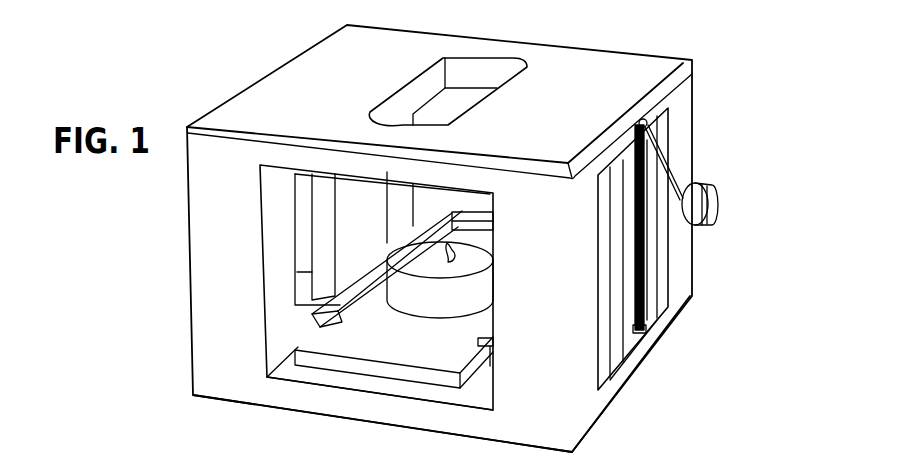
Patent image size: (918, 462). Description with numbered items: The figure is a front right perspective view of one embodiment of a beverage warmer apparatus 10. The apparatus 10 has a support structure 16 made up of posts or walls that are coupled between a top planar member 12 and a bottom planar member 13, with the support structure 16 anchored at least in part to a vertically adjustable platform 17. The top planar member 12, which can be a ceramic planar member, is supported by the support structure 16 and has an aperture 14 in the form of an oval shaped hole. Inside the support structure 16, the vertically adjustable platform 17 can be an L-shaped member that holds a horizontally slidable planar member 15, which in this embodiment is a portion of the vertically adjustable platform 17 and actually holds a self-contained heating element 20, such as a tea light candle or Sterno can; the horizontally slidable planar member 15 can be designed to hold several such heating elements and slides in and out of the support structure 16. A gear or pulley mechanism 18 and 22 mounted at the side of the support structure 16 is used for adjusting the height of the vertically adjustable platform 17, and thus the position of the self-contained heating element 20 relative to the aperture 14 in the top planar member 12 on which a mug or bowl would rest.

The beverage warmer apparatus 10 is at (118, 221).
The top planar member 12 is at (358, 84).
The bottom planar member 13 is at (392, 421).
The aperture 14 is at (456, 98).
The horizontally slidable planar member 15 is at (420, 349).
The support structure 16 is at (690, 98).
The vertically adjustable platform 17 is at (343, 267).
The pulley mechanism 18 is at (720, 185).
The self-contained heating element 20 is at (440, 276).
The pulley mechanism 22 is at (662, 162).